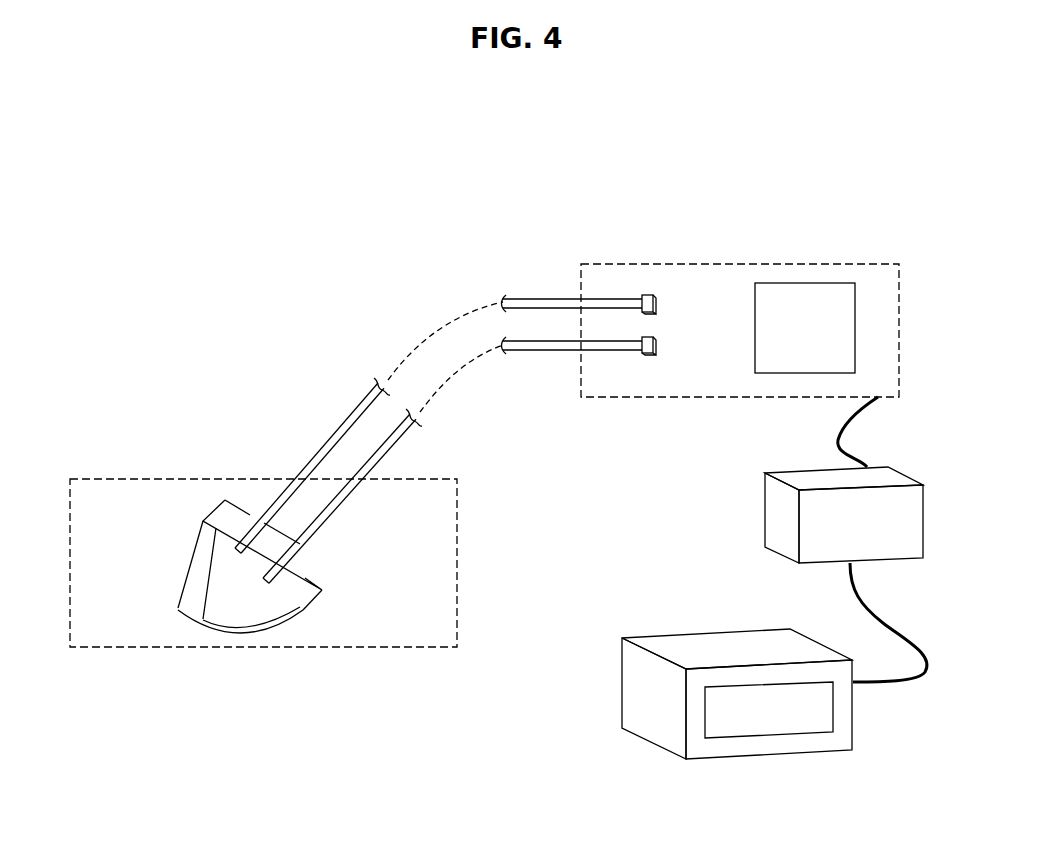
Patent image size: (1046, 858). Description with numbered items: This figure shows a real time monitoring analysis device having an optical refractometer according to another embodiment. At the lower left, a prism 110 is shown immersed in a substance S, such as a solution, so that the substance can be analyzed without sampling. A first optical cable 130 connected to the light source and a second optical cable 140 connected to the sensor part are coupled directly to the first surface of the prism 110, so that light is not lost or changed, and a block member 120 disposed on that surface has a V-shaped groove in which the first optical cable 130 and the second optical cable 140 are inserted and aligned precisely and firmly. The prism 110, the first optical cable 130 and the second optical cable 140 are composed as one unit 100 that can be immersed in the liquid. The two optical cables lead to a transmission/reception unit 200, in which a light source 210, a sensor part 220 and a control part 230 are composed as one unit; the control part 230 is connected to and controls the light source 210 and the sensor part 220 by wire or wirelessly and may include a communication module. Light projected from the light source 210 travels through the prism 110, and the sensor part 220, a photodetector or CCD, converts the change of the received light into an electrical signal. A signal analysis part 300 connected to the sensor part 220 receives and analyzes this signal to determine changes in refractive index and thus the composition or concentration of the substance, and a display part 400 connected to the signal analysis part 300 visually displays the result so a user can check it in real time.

The substance S is at (160, 487).
The unit 100 is at (412, 737).
The prism 110 is at (242, 610).
The block member 120 is at (305, 600).
The first optical cable 130 is at (289, 495).
The second optical cable 140 is at (352, 483).
The transmission/reception unit 200 is at (726, 250).
The light source 210 is at (648, 295).
The sensor part 220 is at (650, 354).
The control part 230 is at (817, 290).
The signal analysis part 300 is at (773, 520).
The display part 400 is at (777, 725).